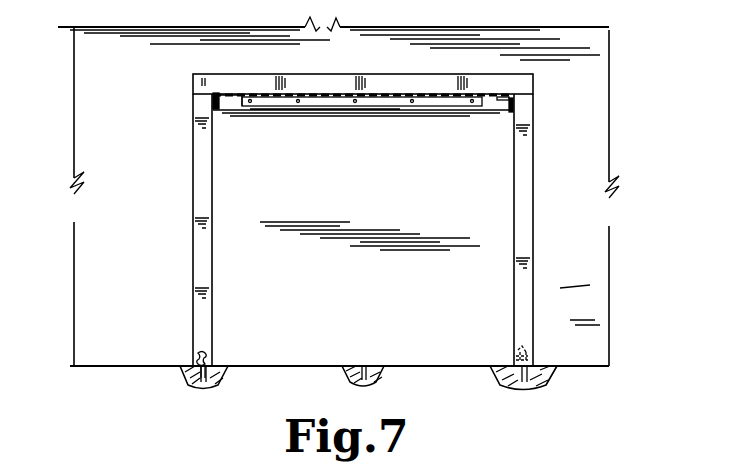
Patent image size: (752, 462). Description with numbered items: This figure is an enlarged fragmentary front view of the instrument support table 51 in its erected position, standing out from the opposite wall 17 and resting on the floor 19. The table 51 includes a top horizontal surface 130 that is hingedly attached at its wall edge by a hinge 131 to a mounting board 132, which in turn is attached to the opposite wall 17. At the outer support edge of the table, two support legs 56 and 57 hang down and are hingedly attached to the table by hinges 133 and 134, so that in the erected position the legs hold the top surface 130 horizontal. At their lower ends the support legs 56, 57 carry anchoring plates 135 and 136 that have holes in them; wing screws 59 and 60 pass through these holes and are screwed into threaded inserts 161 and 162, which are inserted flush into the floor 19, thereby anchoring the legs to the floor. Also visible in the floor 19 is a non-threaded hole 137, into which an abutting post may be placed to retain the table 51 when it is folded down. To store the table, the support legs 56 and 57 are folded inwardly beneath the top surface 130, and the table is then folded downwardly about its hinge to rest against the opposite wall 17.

The instrument support table 51 is at (611, 31).
The opposite wall 17 is at (580, 290).
The floor 19 is at (430, 369).
The top horizontal surface 130 is at (204, 74).
The hinge 131 is at (396, 104).
The mounting board 132 is at (268, 110).
The hinge 133 is at (515, 105).
The hinge 134 is at (213, 100).
The support leg 56 is at (528, 210).
The support leg 57 is at (202, 203).
The wing screw 59 is at (516, 350).
The wing screw 60 is at (200, 352).
The anchoring plate 135 is at (512, 365).
The anchoring plate 136 is at (212, 363).
The non-threaded hole 137 is at (374, 381).
The threaded insert 161 is at (530, 388).
The threaded insert 162 is at (214, 388).